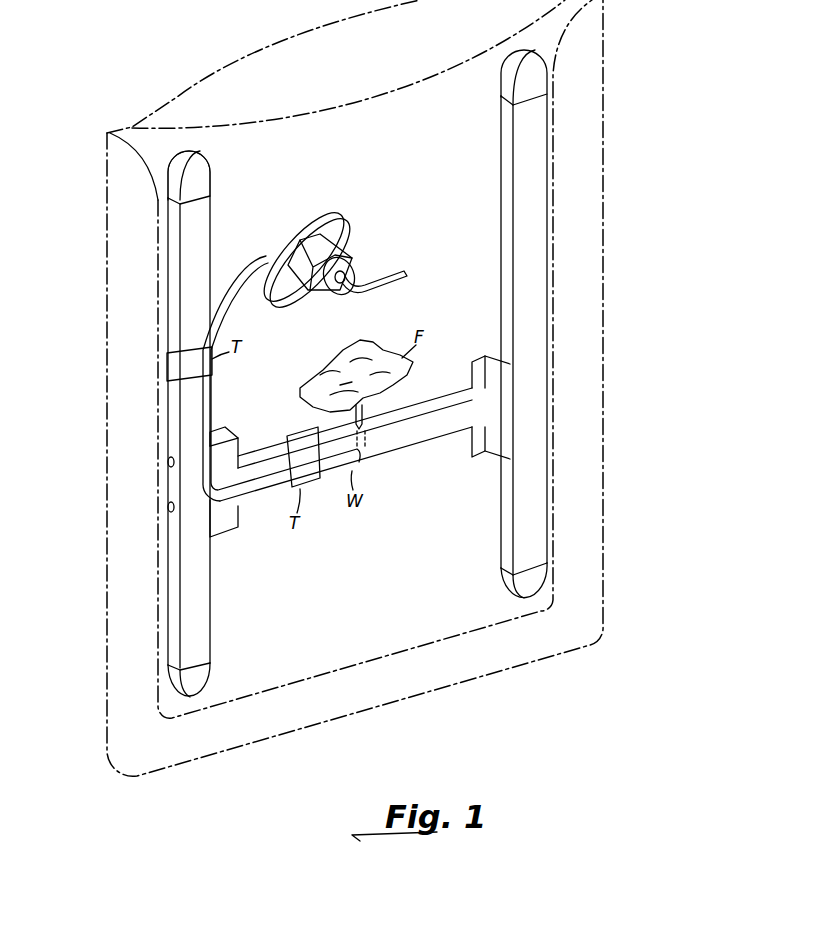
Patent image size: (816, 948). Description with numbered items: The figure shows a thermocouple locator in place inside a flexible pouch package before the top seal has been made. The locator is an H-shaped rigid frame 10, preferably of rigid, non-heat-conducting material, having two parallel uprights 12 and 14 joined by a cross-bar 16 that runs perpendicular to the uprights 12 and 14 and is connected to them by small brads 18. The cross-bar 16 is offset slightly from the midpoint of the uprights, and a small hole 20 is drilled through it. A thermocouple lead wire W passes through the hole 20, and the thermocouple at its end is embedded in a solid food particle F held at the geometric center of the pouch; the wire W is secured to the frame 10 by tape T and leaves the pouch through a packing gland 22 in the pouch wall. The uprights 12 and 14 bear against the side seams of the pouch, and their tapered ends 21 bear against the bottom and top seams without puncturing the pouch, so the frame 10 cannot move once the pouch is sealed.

The H-shaped rigid frame 10 is at (612, 114).
The upright 12 is at (543, 270).
The upright 14 is at (187, 268).
The cross-bar 16 is at (452, 402).
The brads 18 is at (168, 462).
The hole 20 is at (372, 431).
The ends of uprights 21 is at (210, 180).
The packing gland 22 is at (345, 229).